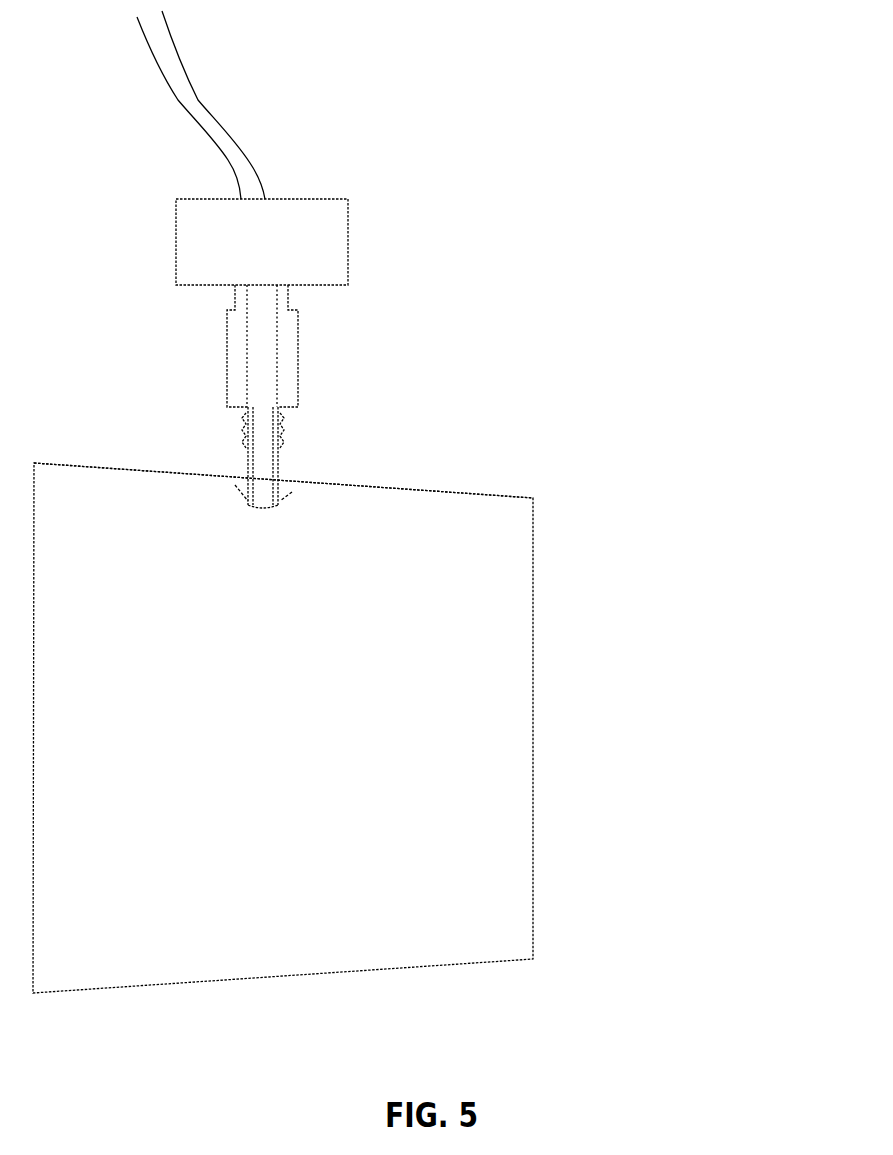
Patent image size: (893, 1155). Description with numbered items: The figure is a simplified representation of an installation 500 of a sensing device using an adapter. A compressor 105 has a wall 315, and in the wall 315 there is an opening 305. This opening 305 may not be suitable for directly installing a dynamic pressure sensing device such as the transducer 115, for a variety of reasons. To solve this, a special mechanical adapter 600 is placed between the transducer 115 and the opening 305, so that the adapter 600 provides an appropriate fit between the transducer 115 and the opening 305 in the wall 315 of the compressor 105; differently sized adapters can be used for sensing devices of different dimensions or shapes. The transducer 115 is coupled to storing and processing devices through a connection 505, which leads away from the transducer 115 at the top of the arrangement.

The connection 505 is at (233, 133).
The transducer 115 is at (348, 245).
The mechanical adapter 600 is at (297, 347).
The opening 305 is at (290, 490).
The compressor 105 is at (533, 638).
The wall 315 is at (488, 503).
The installation 500 is at (706, 166).